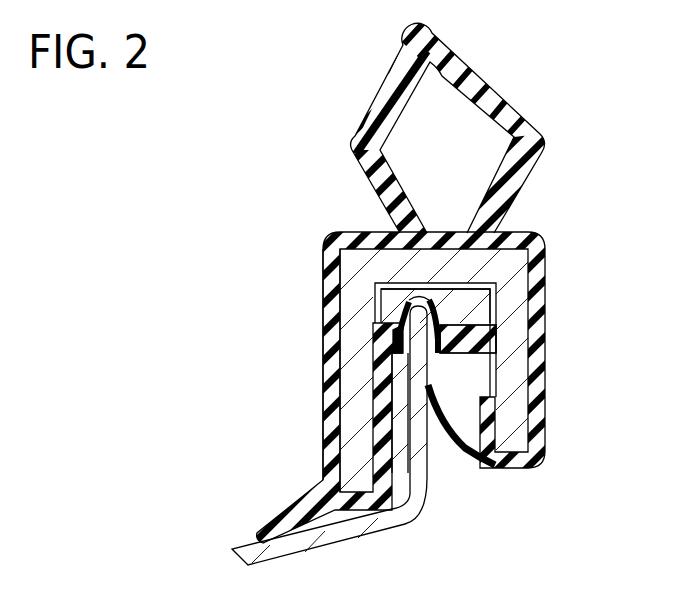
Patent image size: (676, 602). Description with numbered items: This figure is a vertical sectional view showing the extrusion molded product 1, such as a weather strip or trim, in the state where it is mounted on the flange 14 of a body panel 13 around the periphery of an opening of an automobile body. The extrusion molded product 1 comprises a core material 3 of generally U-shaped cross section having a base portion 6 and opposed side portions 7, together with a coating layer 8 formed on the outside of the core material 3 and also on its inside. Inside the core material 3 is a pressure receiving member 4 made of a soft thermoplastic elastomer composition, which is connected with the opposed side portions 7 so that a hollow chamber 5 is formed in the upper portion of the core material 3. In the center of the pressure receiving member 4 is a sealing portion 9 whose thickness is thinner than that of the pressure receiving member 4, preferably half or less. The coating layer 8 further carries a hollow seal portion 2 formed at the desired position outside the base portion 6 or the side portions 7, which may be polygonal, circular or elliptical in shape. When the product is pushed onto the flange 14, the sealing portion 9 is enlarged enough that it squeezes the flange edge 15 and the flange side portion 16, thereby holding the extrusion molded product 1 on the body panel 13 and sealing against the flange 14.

The extrusion molded product 1 is at (360, 203).
The hollow seal portion 2 is at (508, 104).
The core material 3 is at (365, 258).
The pressure receiving member 4 is at (468, 344).
The hollow chamber 5 is at (455, 305).
The base portion 6 is at (490, 290).
The side portions 7 is at (358, 446).
The coating layer 8 is at (330, 348).
The sealing portion 9 is at (405, 299).
The body panel 13 is at (373, 535).
The flange 14 is at (418, 477).
The flange edge 15 is at (400, 350).
The flange side portion 16 is at (432, 384).